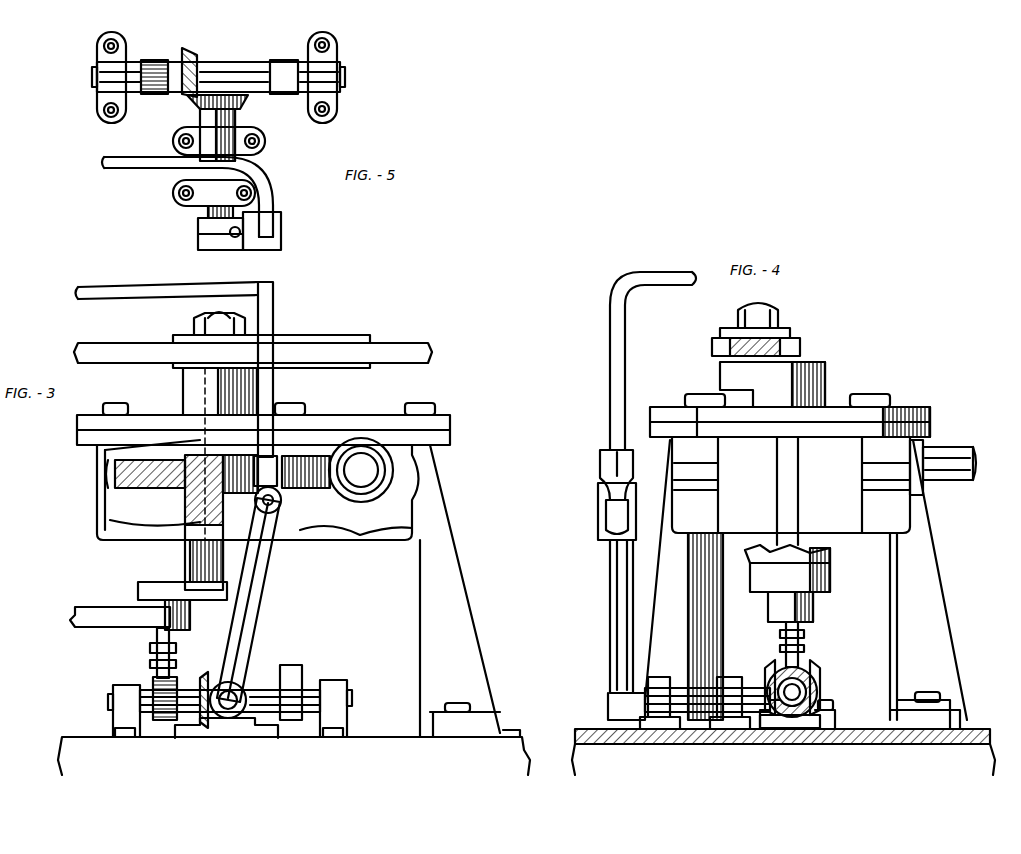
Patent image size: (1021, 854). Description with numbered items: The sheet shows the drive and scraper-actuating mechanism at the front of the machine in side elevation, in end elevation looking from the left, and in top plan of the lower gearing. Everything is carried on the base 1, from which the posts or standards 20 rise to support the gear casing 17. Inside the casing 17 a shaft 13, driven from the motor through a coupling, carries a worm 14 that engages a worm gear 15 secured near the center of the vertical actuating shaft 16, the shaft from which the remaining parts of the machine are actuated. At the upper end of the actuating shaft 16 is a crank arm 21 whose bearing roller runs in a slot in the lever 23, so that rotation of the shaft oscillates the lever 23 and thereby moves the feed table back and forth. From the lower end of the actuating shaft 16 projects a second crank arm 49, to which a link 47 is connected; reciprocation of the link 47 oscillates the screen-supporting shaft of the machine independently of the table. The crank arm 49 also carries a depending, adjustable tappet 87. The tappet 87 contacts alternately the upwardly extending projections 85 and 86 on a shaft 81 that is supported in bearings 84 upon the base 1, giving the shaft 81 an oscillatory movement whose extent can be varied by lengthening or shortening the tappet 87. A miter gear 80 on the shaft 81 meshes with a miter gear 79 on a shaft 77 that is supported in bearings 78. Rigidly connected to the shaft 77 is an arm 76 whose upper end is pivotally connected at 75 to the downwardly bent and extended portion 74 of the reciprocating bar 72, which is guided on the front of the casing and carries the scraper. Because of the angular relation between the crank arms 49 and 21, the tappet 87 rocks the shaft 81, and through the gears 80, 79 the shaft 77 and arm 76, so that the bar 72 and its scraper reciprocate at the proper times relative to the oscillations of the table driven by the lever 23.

In FIG. 3, the base 1 is at (522, 735).
In FIG. 4, the base 1 is at (975, 728).
In FIG. 3, the shaft 13 is at (361, 470).
In FIG. 4, the shaft 13 is at (955, 447).
In FIG. 3, the worm 14 is at (340, 437).
In FIG. 3, the worm gear 15 is at (305, 447).
In FIG. 3, the actuating shaft 16 is at (195, 518).
In FIG. 4, the actuating shaft 16 is at (705, 626).
In FIG. 3, the gear casing 17 is at (420, 517).
In FIG. 4, the gear casing 17 is at (895, 520).
In FIG. 3, the posts or standards 20 is at (455, 592).
In FIG. 4, the posts or standards 20 is at (665, 583).
In FIG. 3, the crank arm 21 is at (183, 383).
In FIG. 4, the crank arm 21 is at (720, 372).
In FIG. 3, the lever 23 is at (395, 343).
In FIG. 4, the lever 23 is at (800, 345).
In FIG. 3, the link 47 is at (120, 622).
In FIG. 4, the link 47 is at (813, 612).
In FIG. 3, the crank arm 49 is at (145, 590).
In FIG. 4, the crank arm 49 is at (820, 592).
In FIG. 5, the reciprocating bar 72 is at (134, 170).
In FIG. 3, the reciprocating bar 72 is at (273, 297).
In FIG. 4, the reciprocating bar 72 is at (662, 272).
In FIG. 3, the downwardly bent and extended portion 74 is at (280, 480).
In FIG. 4, the downwardly bent and extended portion 74 is at (600, 465).
In FIG. 3, the pivotal connection 75 is at (280, 512).
In FIG. 4, the pivotal connection 75 is at (598, 510).
In FIG. 5, the arm 76 is at (198, 243).
In FIG. 3, the arm 76 is at (250, 625).
In FIG. 4, the arm 76 is at (610, 630).
In FIG. 5, the shaft 77 is at (208, 213).
In FIG. 3, the shaft 77 is at (225, 710).
In FIG. 4, the shaft 77 is at (700, 690).
In FIG. 5, the bearings 78 is at (265, 145).
In FIG. 3, the bearings 78 is at (245, 735).
In FIG. 4, the bearings 78 is at (660, 677).
In FIG. 5, the miter gear 79 is at (235, 115).
In FIG. 4, the miter gear 79 is at (770, 715).
In FIG. 5, the miter gear 80 is at (222, 36).
In FIG. 3, the miter gear 80 is at (215, 665).
In FIG. 4, the miter gear 80 is at (815, 690).
In FIG. 5, the shaft 81 is at (245, 52).
In FIG. 3, the shaft 81 is at (265, 665).
In FIG. 4, the shaft 81 is at (792, 700).
In FIG. 5, the bearings 84 is at (97, 51).
In FIG. 3, the bearings 84 is at (113, 718).
In FIG. 4, the bearings 84 is at (810, 725).
In FIG. 5, the projection 85 is at (157, 60).
In FIG. 3, the projection 85 is at (153, 682).
In FIG. 4, the projection 85 is at (785, 660).
In FIG. 5, the projection 86 is at (282, 60).
In FIG. 3, the projection 86 is at (295, 665).
In FIG. 4, the projection 86 is at (818, 672).
In FIG. 3, the tappet 87 is at (157, 660).
In FIG. 4, the tappet 87 is at (800, 655).